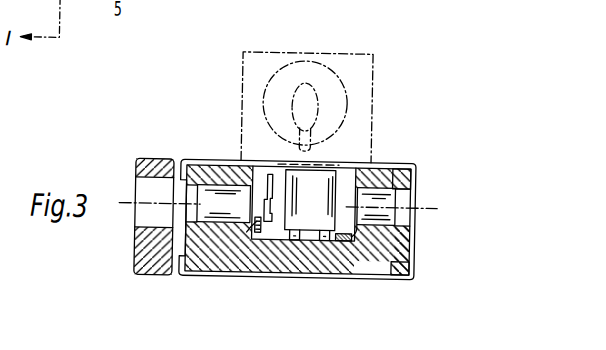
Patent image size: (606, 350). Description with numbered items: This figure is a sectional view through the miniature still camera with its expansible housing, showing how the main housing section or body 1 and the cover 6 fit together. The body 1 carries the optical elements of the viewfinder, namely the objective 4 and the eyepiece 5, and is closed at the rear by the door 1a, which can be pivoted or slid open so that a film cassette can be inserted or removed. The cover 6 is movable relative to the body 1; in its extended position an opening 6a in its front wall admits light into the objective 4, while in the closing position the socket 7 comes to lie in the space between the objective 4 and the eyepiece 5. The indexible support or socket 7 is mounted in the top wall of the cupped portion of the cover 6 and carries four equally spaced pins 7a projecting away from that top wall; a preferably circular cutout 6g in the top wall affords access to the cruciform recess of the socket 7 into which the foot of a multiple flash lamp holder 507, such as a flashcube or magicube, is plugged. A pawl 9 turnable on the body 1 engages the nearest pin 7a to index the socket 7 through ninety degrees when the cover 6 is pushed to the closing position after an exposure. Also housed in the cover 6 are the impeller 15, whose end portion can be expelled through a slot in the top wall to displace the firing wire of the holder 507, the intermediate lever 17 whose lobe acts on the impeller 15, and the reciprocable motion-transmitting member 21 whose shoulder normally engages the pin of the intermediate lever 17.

The main housing section 1 is at (370, 259).
The rear wall or door 1a is at (135, 248).
The objective 4 is at (413, 198).
The eyepiece 5 is at (225, 204).
The cover 6 is at (412, 162).
The opening 6a is at (418, 181).
The circular opening or cutout 6g is at (358, 164).
The indexible support or socket 7 is at (312, 180).
The projections or pins 7a is at (323, 241).
The indexing or displacing pawl 9 is at (410, 241).
The impeller 15 is at (261, 184).
The intermediate lever 17 is at (262, 231).
The motion-transmitting member 21 is at (247, 233).
The multiple flash lamp holder 507 is at (337, 54).